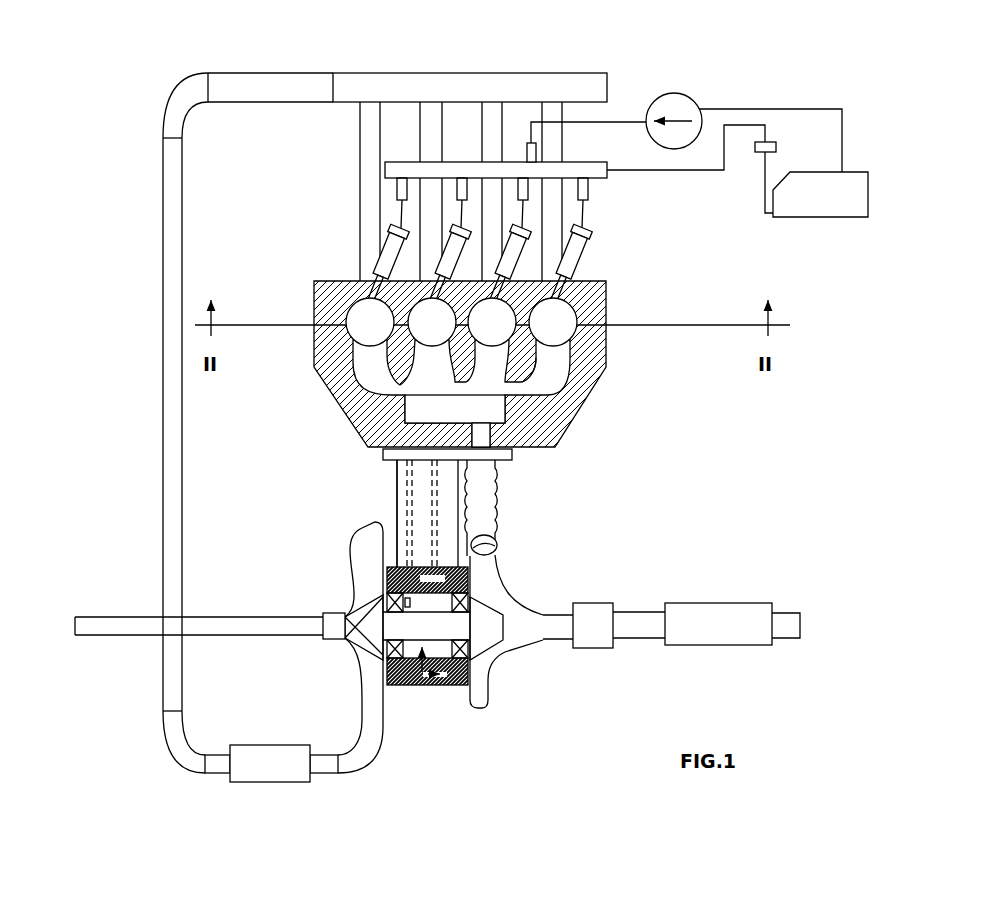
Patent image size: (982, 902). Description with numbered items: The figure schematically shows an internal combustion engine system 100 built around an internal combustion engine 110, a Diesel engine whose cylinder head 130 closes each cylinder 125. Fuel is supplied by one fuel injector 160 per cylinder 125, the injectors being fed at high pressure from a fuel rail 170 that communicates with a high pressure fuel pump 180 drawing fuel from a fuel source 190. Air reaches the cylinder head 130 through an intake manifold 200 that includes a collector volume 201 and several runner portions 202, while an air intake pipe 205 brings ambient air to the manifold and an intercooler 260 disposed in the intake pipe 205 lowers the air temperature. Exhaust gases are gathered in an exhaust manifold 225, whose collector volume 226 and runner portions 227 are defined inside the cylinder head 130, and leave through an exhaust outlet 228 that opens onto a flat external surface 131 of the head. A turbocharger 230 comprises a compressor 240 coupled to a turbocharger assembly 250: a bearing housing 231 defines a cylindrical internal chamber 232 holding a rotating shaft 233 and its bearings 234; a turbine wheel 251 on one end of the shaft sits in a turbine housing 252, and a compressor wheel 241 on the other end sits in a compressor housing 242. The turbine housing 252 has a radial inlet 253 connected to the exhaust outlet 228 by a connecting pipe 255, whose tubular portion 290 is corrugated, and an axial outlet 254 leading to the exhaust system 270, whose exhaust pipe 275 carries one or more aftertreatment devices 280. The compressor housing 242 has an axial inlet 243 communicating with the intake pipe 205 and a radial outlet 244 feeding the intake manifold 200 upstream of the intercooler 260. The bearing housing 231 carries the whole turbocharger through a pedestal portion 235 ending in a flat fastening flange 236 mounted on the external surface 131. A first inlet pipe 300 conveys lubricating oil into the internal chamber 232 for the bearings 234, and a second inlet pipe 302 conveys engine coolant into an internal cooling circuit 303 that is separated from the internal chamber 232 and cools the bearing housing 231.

The internal combustion engine system 100 is at (145, 95).
The intake manifold 200 is at (340, 63).
The collector volume 201 is at (475, 88).
The runner portions 202 is at (373, 160).
The fuel rail 170 is at (596, 164).
The high pressure fuel pump 180 is at (684, 101).
The fuel source 190 is at (820, 200).
The fuel injector 160 is at (577, 258).
The internal combustion engine 110 is at (616, 320).
The cylinder head 130 is at (606, 348).
The cylinder 125 is at (344, 284).
The exhaust manifold 225 is at (561, 378).
The collector volume 226 is at (493, 410).
The runner portions 227 is at (535, 392).
The exhaust outlet 228 is at (483, 434).
The external surface 131 is at (539, 455).
The tubular portion 290 is at (482, 489).
The radial inlet 253 is at (494, 553).
The connecting pipe 255 is at (506, 515).
The first inlet pipe 300 is at (412, 512).
The second inlet pipe 302 is at (433, 493).
The fastening flange 236 is at (395, 462).
The pedestal portion 235 is at (398, 542).
The bearings 234 is at (386, 592).
The rotating shaft 233 is at (388, 617).
The bearing housing 231 is at (397, 686).
The internal chamber 232 is at (425, 686).
The internal cooling circuit 303 is at (442, 686).
The compressor 240 is at (334, 597).
The compressor wheel 241 is at (365, 628).
The compressor housing 242 is at (362, 692).
The axial inlet 243 is at (322, 624).
The radial outlet 244 is at (370, 729).
The air intake pipe 205 is at (90, 625).
The intercooler 260 is at (265, 764).
The turbocharger assembly 250 is at (500, 681).
The turbine wheel 251 is at (490, 628).
The turbine housing 252 is at (479, 704).
The axial outlet 254 is at (535, 628).
The turbocharger 230 is at (498, 713).
The exhaust system 270 is at (771, 582).
The exhaust aftertreatment devices 280 is at (690, 616).
The exhaust pipe 275 is at (796, 631).